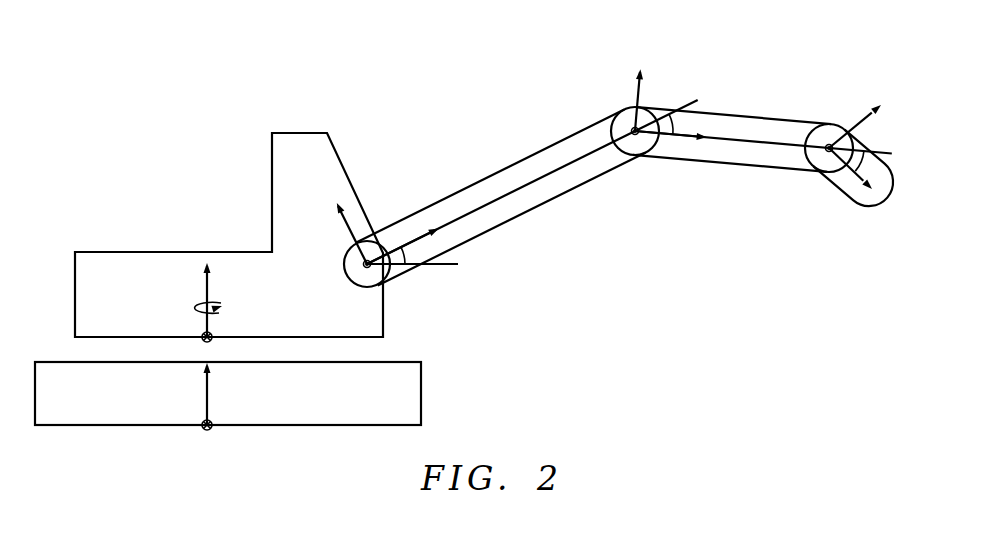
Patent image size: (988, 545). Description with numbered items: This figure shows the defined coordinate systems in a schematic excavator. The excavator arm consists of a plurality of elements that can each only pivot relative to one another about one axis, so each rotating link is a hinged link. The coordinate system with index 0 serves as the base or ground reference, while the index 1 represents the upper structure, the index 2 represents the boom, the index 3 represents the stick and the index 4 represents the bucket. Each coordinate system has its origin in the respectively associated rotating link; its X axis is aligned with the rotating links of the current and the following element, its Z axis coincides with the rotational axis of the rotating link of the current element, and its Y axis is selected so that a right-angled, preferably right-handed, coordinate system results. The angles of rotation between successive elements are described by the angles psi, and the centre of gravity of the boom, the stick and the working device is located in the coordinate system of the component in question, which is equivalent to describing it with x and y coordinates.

The base coordinate frame (undercarriage / lower travelling body) 0 is at (228, 404).
The upper structure 1 is at (229, 246).
The boom 2 is at (505, 195).
The stick 3 is at (751, 119).
The bucket 4 is at (851, 158).